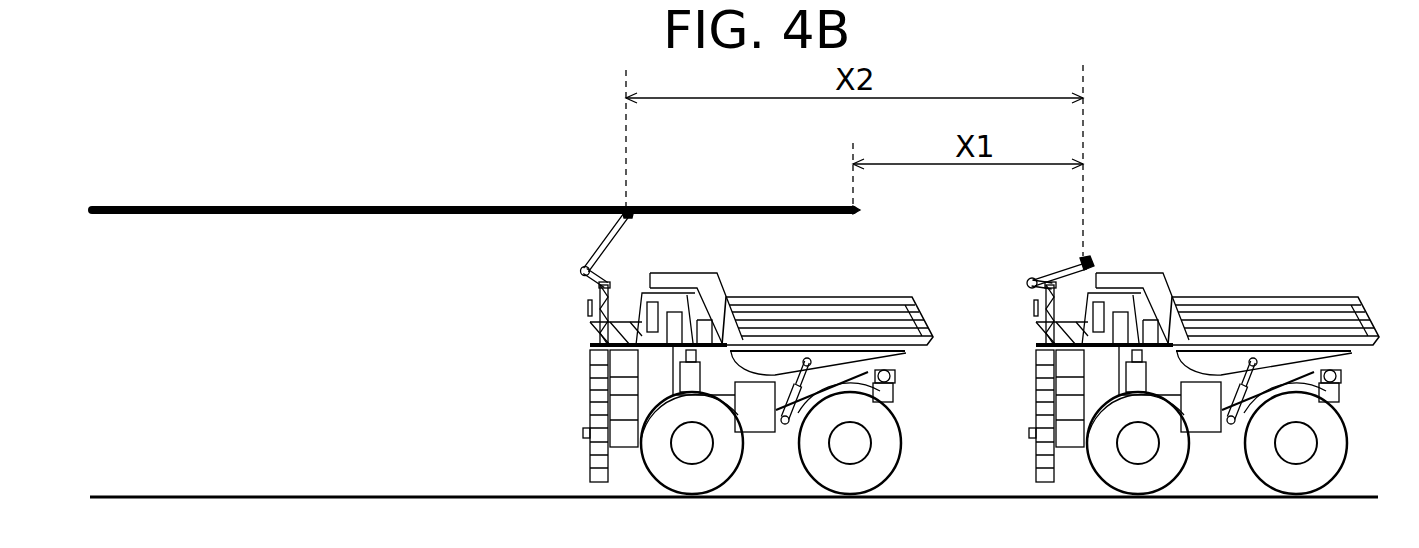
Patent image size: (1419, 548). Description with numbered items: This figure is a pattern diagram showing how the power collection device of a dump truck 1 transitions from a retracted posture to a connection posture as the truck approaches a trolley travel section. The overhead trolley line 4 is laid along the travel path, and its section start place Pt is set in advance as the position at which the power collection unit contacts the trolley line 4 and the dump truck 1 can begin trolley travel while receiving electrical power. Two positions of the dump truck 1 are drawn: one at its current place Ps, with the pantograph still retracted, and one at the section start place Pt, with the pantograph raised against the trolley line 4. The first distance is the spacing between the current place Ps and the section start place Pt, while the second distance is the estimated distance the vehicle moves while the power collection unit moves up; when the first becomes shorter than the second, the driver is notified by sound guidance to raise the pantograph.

The dump truck 1 is at (858, 302).
The trolley line 4 is at (237, 206).
The section start place Pt is at (860, 213).
The current place Ps is at (1087, 261).